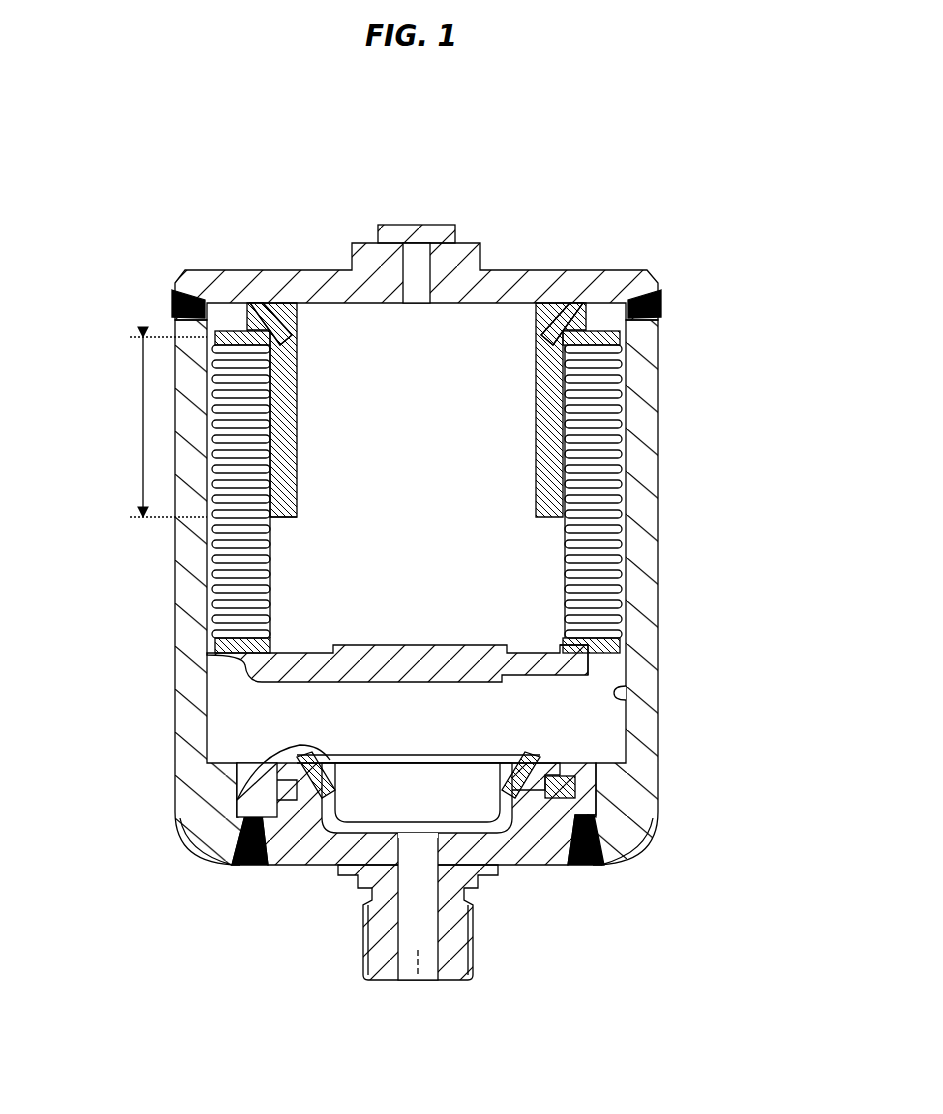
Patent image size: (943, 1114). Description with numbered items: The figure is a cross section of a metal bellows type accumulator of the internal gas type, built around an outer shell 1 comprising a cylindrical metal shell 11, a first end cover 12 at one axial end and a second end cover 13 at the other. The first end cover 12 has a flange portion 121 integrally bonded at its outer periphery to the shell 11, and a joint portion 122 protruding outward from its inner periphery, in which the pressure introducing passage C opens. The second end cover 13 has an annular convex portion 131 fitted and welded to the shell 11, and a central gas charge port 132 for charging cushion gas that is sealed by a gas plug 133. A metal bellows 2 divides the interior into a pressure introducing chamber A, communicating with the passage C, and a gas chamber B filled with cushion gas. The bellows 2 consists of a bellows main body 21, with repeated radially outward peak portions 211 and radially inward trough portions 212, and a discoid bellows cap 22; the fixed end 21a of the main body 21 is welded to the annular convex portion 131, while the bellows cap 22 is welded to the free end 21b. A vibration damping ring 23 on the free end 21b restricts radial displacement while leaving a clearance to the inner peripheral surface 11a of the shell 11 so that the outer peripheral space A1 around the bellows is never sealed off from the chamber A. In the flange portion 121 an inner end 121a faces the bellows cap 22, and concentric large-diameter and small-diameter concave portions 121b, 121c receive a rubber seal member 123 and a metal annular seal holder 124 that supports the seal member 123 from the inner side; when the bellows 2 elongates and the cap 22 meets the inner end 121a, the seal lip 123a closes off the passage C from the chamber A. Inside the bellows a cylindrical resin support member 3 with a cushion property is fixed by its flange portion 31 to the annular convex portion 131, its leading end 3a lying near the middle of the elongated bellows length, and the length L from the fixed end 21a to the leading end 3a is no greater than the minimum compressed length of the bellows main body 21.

The outer shell 1 is at (461, 516).
The shell 11 is at (461, 592).
The inner peripheral surface of the shell 11a is at (625, 698).
The first end cover 12 is at (413, 861).
The flange portion 121 is at (516, 814).
The inner end 121a is at (590, 763).
The large-diameter concave portion 121b is at (585, 795).
The small-diameter concave portion 121c is at (485, 800).
The joint portion 122 is at (372, 955).
The seal member 123 is at (285, 792).
The seal lip 123a is at (268, 746).
The annular seal holder 124 is at (338, 796).
The second end cover 13 is at (377, 239).
The annular convex portion 131 is at (182, 320).
The gas charge port 132 is at (412, 285).
The gas plug 133 is at (432, 235).
The metal bellows 2 is at (404, 532).
The bellows main body 21 is at (412, 492).
The fixed end 21a is at (614, 337).
The free end 21b is at (272, 648).
The peak portions 211 is at (622, 428).
The trough portions 212 is at (548, 432).
The bellows cap 22 is at (467, 689).
The vibration damping ring 23 is at (590, 655).
The support member 3 is at (385, 382).
The leading end 3a is at (272, 520).
The flange portion of the support member 31 is at (252, 306).
The pressure introducing chamber A is at (242, 710).
The outer peripheral space A1 is at (624, 493).
The gas chamber B is at (505, 577).
The pressure introducing passage C is at (418, 988).
The length L is at (165, 427).